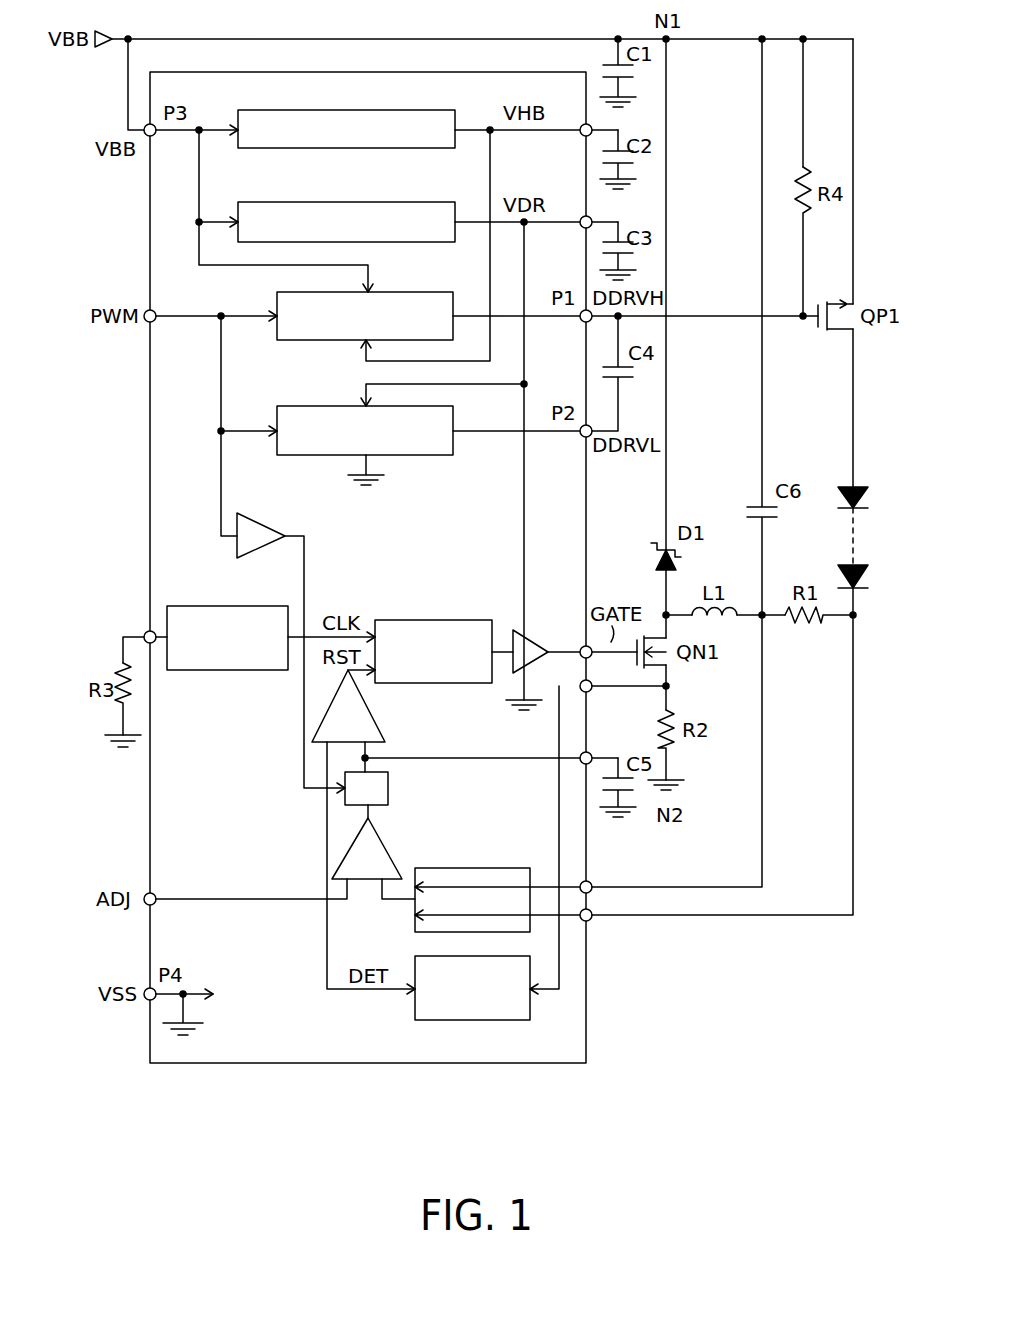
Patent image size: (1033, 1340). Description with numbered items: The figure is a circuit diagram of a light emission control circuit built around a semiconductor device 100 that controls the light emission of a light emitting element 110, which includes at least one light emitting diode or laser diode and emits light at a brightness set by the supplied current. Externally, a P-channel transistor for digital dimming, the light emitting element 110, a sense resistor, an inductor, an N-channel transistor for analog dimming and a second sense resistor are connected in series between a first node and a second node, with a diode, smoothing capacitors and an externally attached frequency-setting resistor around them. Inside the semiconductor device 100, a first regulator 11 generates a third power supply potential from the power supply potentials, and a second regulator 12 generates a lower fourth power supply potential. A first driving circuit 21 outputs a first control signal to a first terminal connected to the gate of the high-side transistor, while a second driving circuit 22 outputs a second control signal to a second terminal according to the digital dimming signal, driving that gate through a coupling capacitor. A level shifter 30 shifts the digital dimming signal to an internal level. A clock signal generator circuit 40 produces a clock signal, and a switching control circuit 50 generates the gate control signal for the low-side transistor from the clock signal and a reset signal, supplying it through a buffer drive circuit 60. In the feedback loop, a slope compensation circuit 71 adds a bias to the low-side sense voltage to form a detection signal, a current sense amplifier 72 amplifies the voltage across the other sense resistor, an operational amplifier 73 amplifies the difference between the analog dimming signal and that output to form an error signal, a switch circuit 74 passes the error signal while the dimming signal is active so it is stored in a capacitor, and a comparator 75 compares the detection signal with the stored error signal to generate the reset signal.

The semiconductor device 100 is at (270, 72).
The first regulator 11 is at (400, 110).
The second regulator 12 is at (400, 202).
The first driving circuit 21 is at (400, 292).
The second driving circuit 22 is at (305, 406).
The level shifter 30 is at (268, 523).
The clock signal generator circuit 40 is at (220, 606).
The switching control circuit 50 is at (455, 620).
The drive circuit 60 is at (540, 634).
The slope compensation circuit 71 is at (508, 956).
The current sense amplifier 72 is at (490, 868).
The operational amplifier 73 is at (383, 841).
The switch circuit 74 is at (392, 789).
The comparator 75 is at (372, 712).
The light emitting element 110 is at (876, 480).